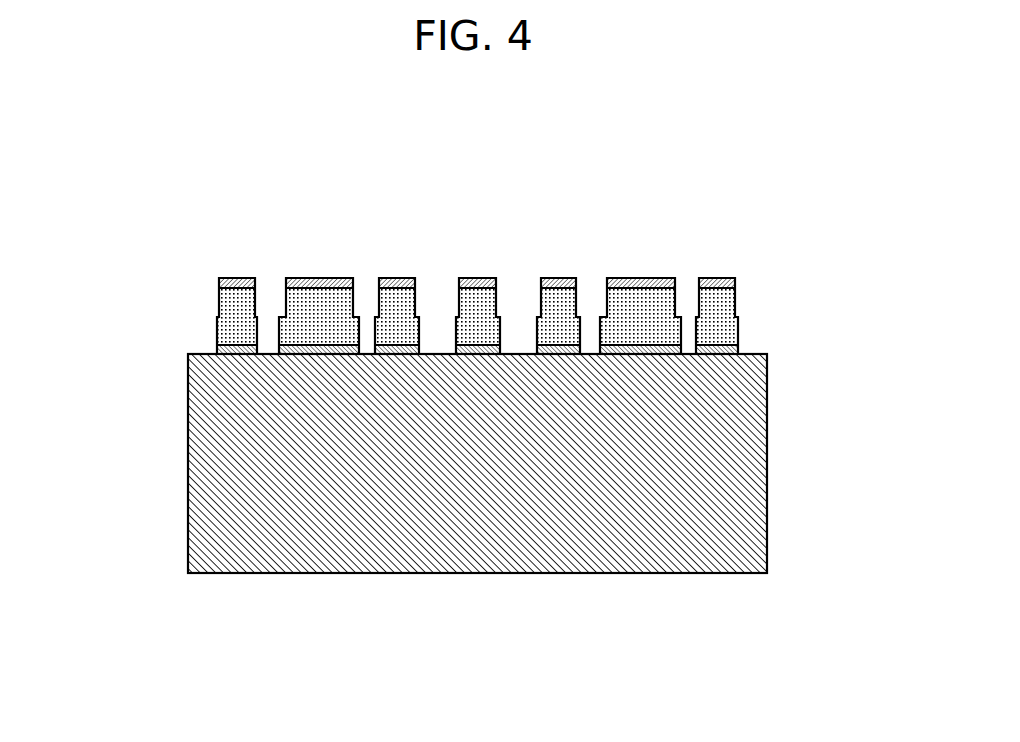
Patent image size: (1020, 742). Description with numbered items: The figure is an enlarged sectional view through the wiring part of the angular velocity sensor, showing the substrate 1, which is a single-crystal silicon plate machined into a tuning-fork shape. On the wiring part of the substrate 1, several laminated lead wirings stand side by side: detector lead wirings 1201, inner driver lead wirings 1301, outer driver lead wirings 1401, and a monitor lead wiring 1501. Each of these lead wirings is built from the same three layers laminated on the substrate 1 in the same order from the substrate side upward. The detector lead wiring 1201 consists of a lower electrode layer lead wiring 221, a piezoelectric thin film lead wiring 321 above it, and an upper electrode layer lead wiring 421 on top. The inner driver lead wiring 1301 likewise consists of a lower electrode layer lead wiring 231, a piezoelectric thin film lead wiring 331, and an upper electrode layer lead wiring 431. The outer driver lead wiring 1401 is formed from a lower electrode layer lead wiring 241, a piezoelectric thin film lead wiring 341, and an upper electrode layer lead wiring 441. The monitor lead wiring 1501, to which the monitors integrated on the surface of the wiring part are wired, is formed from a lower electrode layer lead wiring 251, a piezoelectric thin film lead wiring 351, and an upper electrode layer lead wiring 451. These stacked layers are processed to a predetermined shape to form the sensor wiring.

The substrate 1 is at (750, 505).
The lower electrode layer lead wiring 221 is at (305, 348).
The piezoelectric thin film lead wiring 321 is at (326, 308).
The upper electrode layer lead wiring 421 is at (346, 287).
The lower electrode layer lead wiring 231 is at (378, 345).
The piezoelectric thin film lead wiring 331 is at (392, 305).
The upper electrode layer lead wiring 431 is at (411, 286).
The lower electrode layer lead wiring 241 is at (218, 348).
The piezoelectric thin film lead wiring 341 is at (236, 310).
The upper electrode layer lead wiring 441 is at (232, 280).
The lower electrode layer lead wiring 251 is at (462, 348).
The piezoelectric thin film lead wiring 351 is at (474, 330).
The upper electrode layer lead wiring 451 is at (488, 285).
The detector lead wiring 1201 is at (150, 139).
The inner driver lead wiring 1301 is at (337, 176).
The outer driver lead wiring 1401 is at (138, 218).
The monitor lead wiring 1501 is at (560, 626).